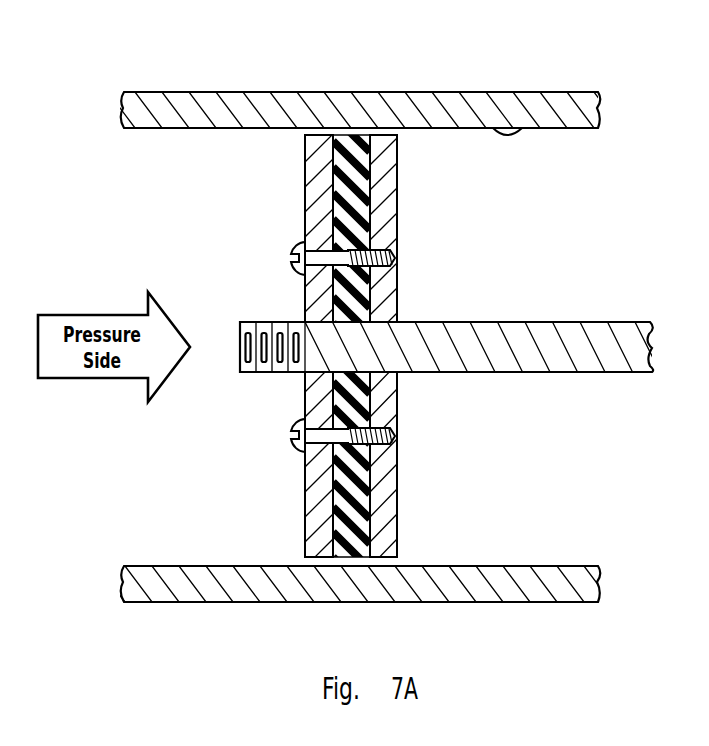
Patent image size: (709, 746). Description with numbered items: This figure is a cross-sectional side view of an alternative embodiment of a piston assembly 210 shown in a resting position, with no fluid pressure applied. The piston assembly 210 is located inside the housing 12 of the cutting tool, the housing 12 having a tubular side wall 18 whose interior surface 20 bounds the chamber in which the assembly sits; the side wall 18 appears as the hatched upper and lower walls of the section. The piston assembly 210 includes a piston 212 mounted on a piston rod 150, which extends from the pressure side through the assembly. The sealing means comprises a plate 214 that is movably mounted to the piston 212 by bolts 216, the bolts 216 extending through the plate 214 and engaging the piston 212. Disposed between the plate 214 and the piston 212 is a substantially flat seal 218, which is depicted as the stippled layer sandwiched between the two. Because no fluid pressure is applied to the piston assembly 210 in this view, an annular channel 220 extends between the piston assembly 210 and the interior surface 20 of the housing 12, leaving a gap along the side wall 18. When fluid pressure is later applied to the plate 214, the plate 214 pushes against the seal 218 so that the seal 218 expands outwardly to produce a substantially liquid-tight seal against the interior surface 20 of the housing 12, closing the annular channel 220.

The housing 12 is at (351, 78).
The tubular side wall 18 is at (373, 103).
The interior surface 20 is at (525, 127).
The piston rod 150 is at (545, 330).
The piston assembly 210 is at (291, 330).
The piston 212 is at (385, 190).
The plate 214 is at (305, 492).
The bolts 216 is at (292, 248).
The seal 218 is at (347, 533).
The annular channel 220 is at (338, 135).